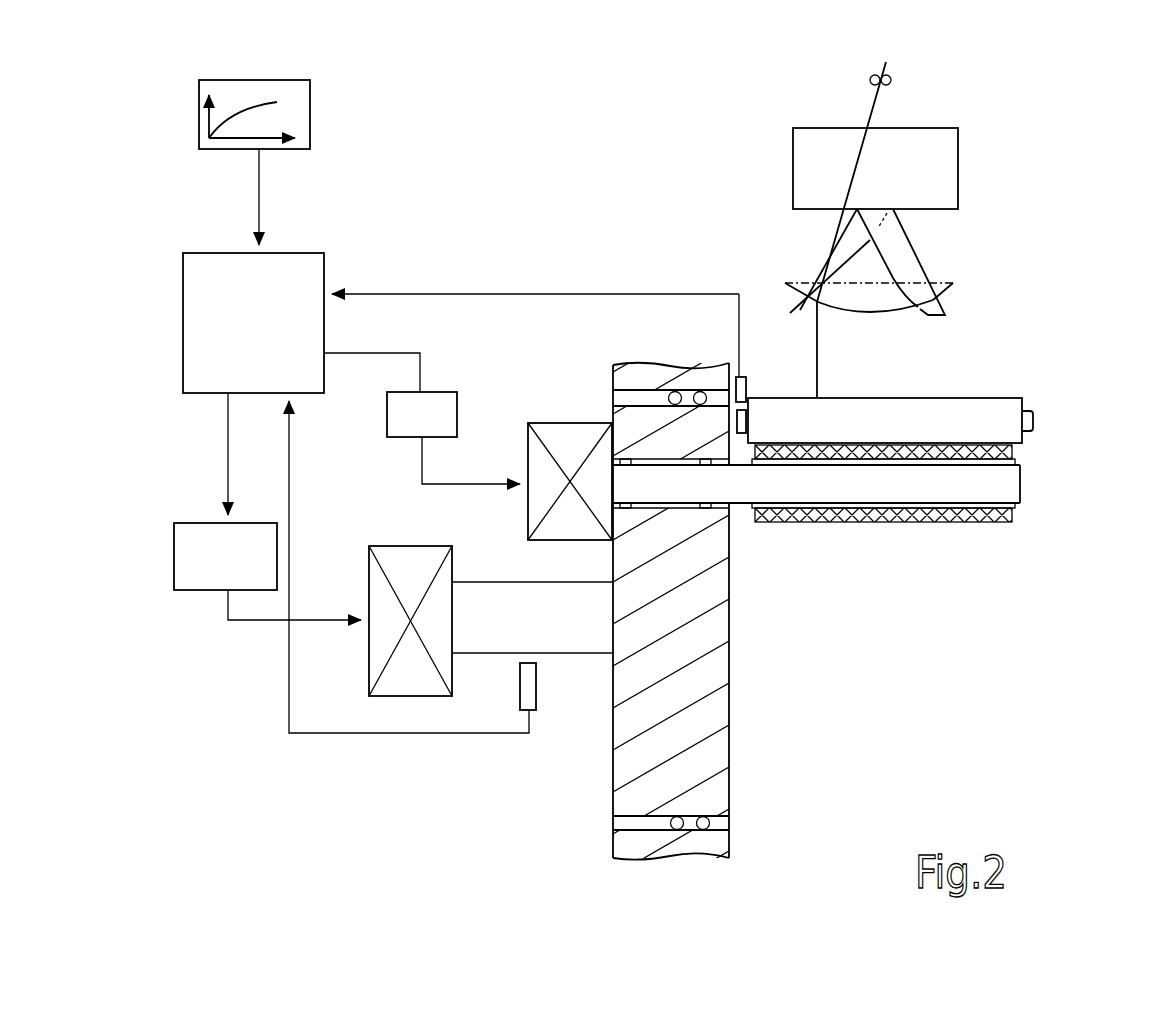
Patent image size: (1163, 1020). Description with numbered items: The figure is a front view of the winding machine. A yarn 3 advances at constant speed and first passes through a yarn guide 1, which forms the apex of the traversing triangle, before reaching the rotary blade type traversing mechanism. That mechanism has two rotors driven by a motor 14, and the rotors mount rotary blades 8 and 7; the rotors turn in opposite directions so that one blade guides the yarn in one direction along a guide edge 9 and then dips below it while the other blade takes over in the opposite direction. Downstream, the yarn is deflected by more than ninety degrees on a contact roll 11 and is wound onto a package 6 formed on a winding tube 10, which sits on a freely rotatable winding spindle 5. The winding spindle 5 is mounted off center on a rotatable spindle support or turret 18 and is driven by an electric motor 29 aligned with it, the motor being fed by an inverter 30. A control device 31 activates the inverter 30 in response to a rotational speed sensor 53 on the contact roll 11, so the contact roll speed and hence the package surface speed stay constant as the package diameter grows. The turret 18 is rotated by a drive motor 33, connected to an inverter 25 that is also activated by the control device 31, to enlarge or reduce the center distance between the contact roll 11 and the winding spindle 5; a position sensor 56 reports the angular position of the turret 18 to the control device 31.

The yarn guide 1 is at (893, 80).
The yarn 3 is at (877, 108).
The winding spindle 5 is at (1005, 483).
The package 6 is at (980, 517).
The rotary blade 7 is at (857, 235).
The rotary blade 8 is at (903, 260).
The guide edge 9 is at (885, 303).
The winding tube 10 is at (1015, 462).
The contact roll 11 is at (1005, 410).
The motor 14 is at (917, 165).
The spindle support or turret 18 is at (622, 757).
The inverter 25 is at (192, 565).
The electric motor 29 is at (568, 450).
The inverter 30 is at (400, 428).
The control device 31 is at (292, 280).
The drive motor 33 is at (408, 668).
The rotational speed sensor 53 is at (738, 390).
The position sensor 56 is at (528, 675).